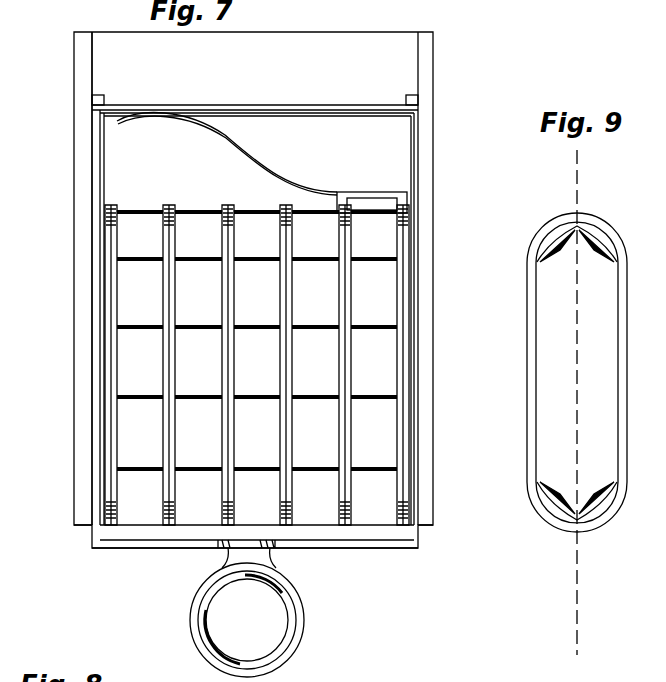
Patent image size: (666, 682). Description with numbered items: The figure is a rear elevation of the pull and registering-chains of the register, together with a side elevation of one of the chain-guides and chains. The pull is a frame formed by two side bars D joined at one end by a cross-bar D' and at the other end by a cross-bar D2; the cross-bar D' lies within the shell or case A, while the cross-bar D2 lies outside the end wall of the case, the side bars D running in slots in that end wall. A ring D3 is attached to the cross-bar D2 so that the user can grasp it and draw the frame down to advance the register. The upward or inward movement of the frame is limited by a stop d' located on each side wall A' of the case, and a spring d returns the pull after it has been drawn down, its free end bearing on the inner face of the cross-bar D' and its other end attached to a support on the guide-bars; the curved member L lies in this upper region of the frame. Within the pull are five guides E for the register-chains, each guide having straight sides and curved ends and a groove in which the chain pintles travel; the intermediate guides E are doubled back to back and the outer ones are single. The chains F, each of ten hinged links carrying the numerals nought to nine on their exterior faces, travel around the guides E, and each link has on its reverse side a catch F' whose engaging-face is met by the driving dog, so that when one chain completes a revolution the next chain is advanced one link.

In FIG. 7, the shell or case A is at (265, 290).
In FIG. 7, the side wall A' is at (73, 278).
In FIG. 7, the side bars D is at (255, 329).
In FIG. 7, the cross-bar D' is at (255, 99).
In FIG. 7, the spring d is at (104, 91).
In FIG. 7, the stop d' is at (407, 94).
In FIG. 7, the spring L is at (227, 154).
In FIG. 7, the guides for the register-chains E is at (415, 340).
In FIG. 9, the guides for the register-chains E is at (527, 374).
In FIG. 7, the chains F is at (247, 367).
In FIG. 9, the chains F is at (577, 373).
In FIG. 9, the projection or catch F' is at (577, 372).
In FIG. 7, the cross-bar D2 is at (295, 584).
In FIG. 7, the ring D3 is at (222, 618).